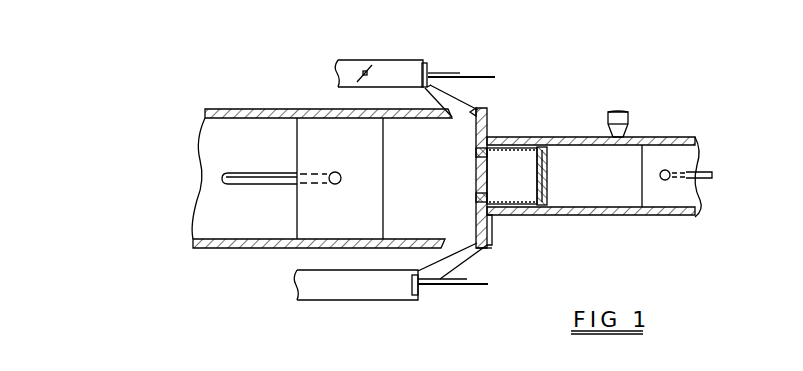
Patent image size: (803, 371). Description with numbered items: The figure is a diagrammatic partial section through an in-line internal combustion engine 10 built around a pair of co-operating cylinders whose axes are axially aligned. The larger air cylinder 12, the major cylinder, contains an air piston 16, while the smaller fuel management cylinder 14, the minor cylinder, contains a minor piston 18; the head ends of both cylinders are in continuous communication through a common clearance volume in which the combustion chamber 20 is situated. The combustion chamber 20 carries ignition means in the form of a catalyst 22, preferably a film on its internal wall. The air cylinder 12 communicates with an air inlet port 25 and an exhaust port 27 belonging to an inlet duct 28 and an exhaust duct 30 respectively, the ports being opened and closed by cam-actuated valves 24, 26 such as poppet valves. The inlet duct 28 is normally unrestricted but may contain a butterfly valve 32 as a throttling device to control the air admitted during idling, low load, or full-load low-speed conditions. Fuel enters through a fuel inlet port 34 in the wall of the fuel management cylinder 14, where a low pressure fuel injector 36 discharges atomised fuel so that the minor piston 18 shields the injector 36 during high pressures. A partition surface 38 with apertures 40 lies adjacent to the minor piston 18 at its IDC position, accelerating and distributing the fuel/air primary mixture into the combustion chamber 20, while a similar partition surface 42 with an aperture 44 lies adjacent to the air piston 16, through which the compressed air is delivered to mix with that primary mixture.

The engine 10 is at (178, 157).
The air cylinder 12 is at (260, 128).
The fuel management cylinder 14 is at (702, 196).
The air piston 16 is at (323, 130).
The minor piston 18 is at (676, 216).
The combustion chamber 20 is at (517, 183).
The catalyst 22 is at (507, 145).
The inlet valve 24 is at (428, 68).
The air inlet port 25 is at (453, 100).
The exhaust valve 26 is at (412, 292).
The exhaust port 27 is at (440, 262).
The inlet duct 28 is at (406, 70).
The exhaust duct 30 is at (335, 292).
The butterfly valve 32 is at (365, 68).
The fuel inlet port 34 is at (621, 138).
The low pressure fuel injector 36 is at (630, 116).
The partition surface 38 is at (534, 140).
The apertures 40 is at (548, 158).
The partition surface 42 is at (490, 230).
The aperture 44 is at (485, 178).